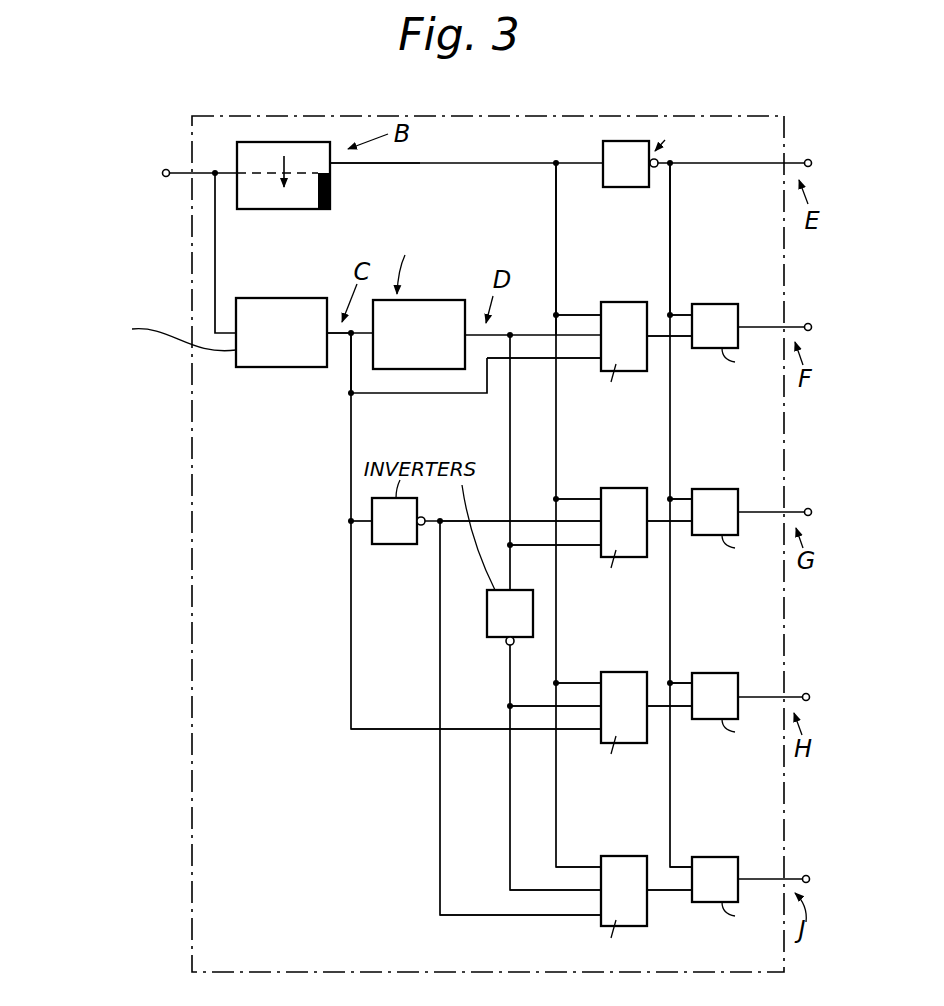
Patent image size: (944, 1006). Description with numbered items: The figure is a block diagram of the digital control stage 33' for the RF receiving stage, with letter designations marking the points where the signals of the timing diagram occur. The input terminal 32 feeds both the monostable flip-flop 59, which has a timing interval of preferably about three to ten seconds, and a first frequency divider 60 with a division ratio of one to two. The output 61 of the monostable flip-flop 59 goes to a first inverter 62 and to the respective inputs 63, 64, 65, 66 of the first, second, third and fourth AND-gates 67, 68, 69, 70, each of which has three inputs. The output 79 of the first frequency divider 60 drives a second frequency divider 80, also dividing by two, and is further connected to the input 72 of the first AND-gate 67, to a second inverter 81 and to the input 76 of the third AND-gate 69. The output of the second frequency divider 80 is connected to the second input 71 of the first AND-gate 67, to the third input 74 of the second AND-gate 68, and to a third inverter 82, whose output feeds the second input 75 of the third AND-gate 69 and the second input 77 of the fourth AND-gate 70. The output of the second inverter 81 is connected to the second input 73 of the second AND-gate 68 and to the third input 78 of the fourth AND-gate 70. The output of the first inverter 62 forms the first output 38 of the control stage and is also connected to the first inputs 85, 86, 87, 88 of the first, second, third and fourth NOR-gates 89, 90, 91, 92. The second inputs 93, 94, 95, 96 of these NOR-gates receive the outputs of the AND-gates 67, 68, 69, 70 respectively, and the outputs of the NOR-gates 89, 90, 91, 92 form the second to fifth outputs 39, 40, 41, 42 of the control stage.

The input terminal 32 is at (166, 169).
The control stage 33' is at (488, 519).
The first output 38 is at (809, 159).
The second output 39 is at (809, 323).
The third output 40 is at (808, 508).
The fourth output 41 is at (806, 693).
The fifth output 42 is at (806, 875).
The monostable flip-flop 59 is at (273, 210).
The first frequency divider 60 is at (270, 368).
The output of M-FF 61 is at (340, 165).
The first inverter 62 is at (603, 147).
The input of first AND-gate 63 is at (598, 314).
The input of second AND-gate 64 is at (597, 499).
The input of third AND-gate 65 is at (597, 683).
The input of fourth AND-gate 66 is at (590, 867).
The first AND-gate 67 is at (632, 302).
The second AND-gate 68 is at (636, 488).
The third AND-gate 69 is at (633, 672).
The fourth AND-gate 70 is at (628, 856).
The second input of first AND-gate 71 is at (601, 336).
The input of first AND-gate 72 is at (597, 360).
The second input of second AND-gate 73 is at (600, 521).
The third input of second AND-gate 74 is at (597, 548).
The second input of third AND-gate 75 is at (600, 706).
The input of third AND-gate 76 is at (594, 733).
The second input of fourth AND-gate 77 is at (578, 891).
The third input of fourth AND-gate 78 is at (593, 917).
The output of first frequency divider 79 is at (350, 338).
The second frequency divider 80 is at (408, 300).
The second inverter 81 is at (393, 546).
The third inverter 82 is at (492, 648).
The first input of first NOR-gate 85 is at (683, 313).
The first input of second NOR-gate 86 is at (683, 499).
The first input of third NOR-gate 87 is at (682, 683).
The first input of fourth NOR-gate 88 is at (680, 865).
The first NOR-gate 89 is at (722, 304).
The second NOR-gate 90 is at (718, 489).
The third NOR-gate 91 is at (718, 673).
The fourth NOR-gate 92 is at (722, 857).
The second input of first NOR-gate 93 is at (679, 340).
The second input of second NOR-gate 94 is at (678, 525).
The second input of third NOR-gate 95 is at (680, 708).
The second input of fourth NOR-gate 96 is at (660, 893).